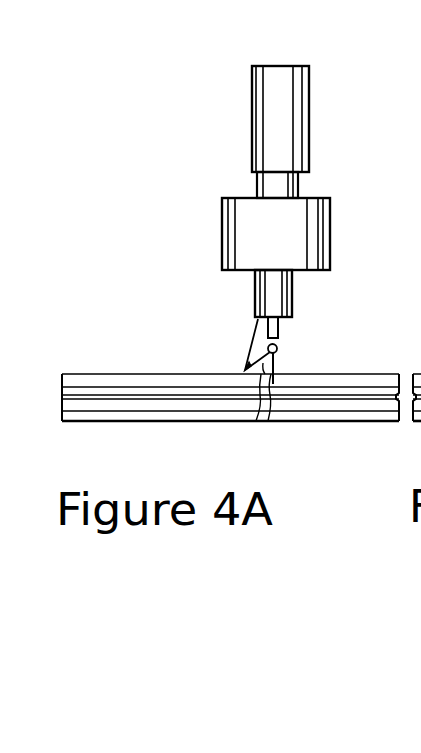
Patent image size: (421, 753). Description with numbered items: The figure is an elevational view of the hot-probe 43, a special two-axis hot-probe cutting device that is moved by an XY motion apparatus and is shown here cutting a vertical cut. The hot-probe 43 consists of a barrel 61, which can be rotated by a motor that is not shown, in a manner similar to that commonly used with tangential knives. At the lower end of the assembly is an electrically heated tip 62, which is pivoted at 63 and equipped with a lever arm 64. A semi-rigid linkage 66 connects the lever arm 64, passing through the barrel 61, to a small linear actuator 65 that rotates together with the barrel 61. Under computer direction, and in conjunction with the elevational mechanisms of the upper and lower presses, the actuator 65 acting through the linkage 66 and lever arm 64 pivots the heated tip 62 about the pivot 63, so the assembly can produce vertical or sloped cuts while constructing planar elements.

The hot-probe 43 is at (335, 70).
The small linear actuator 65 is at (287, 123).
The barrel 61 is at (297, 190).
The pivot 63 is at (278, 346).
The semi-rigid linkage 66 is at (250, 345).
The electrically heated tip 62 is at (281, 373).
The lever arm 64 is at (253, 419).